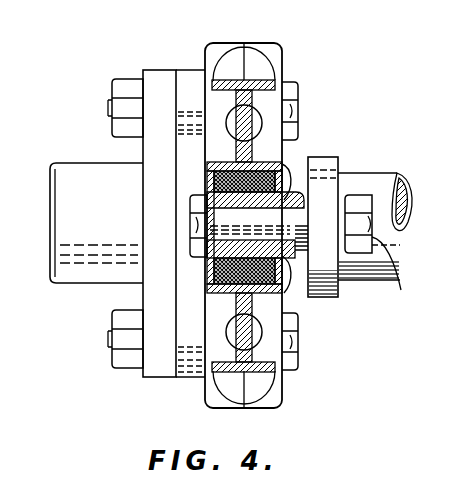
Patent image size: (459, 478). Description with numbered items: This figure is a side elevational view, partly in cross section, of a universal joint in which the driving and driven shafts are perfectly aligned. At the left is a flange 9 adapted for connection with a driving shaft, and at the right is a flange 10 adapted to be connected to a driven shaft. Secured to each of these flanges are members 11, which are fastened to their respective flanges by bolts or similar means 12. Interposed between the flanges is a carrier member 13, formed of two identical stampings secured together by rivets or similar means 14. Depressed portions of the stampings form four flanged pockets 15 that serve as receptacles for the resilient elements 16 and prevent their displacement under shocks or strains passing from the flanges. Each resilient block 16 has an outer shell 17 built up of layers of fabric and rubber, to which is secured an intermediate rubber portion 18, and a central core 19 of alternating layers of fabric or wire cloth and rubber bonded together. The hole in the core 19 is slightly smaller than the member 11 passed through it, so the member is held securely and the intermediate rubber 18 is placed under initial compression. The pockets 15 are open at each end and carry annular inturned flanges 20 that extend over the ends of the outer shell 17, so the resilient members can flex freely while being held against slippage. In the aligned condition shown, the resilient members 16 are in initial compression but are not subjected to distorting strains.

The flange 9 is at (62, 166).
The flange 10 is at (333, 163).
The member 11 is at (184, 72).
The bolt 12 is at (110, 98).
The carrier member 13 is at (260, 43).
The rivet 14 is at (252, 118).
The flanged pocket 15 is at (284, 130).
The resilient element 16 is at (292, 164).
The outer shell 17 is at (214, 289).
The intermediate rubber portion 18 is at (276, 278).
The central core 19 is at (292, 262).
The annular inturned flange 20 is at (280, 285).